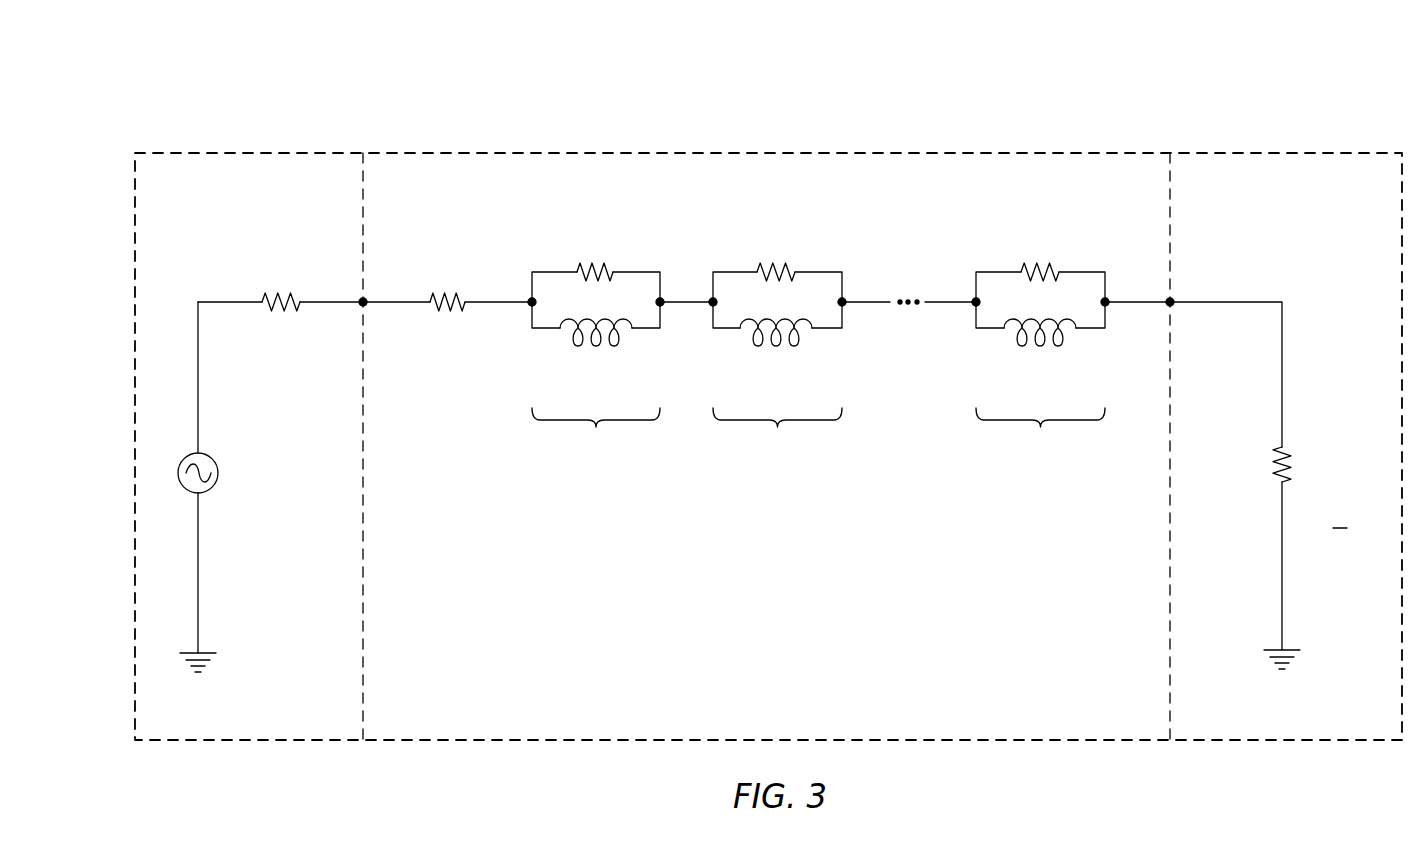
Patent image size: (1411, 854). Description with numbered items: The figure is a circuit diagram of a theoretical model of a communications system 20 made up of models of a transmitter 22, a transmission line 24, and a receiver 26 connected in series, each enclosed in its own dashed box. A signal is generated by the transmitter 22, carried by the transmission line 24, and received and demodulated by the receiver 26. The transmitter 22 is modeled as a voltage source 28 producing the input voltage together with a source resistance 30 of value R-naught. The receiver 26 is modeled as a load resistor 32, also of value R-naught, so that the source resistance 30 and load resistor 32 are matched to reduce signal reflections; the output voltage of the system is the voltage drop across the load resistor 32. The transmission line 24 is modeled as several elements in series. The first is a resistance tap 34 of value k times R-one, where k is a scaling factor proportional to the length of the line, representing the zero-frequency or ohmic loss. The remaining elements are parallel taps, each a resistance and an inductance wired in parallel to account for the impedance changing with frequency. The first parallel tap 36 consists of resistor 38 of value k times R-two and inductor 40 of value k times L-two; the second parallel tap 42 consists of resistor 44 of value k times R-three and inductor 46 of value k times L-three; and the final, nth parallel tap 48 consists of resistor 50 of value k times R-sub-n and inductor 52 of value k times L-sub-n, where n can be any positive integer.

The communications system 20 is at (104, 100).
The transmitter 22 is at (248, 153).
The transmission line 24 is at (683, 152).
The receiver 26 is at (1263, 152).
The voltage source 28 is at (218, 473).
The source resistance 30 is at (280, 288).
The load resistor 32 is at (1274, 452).
The resistance tap 34 is at (450, 288).
The first parallel tap 36 is at (596, 333).
The resistor 38 is at (575, 270).
The inductor 40 is at (625, 338).
The second parallel tap 42 is at (777, 333).
The resistor 44 is at (755, 270).
The inductor 46 is at (805, 338).
The final parallel tap 48 is at (1040, 333).
The resistor 50 is at (1018, 270).
The inductor 52 is at (1070, 338).